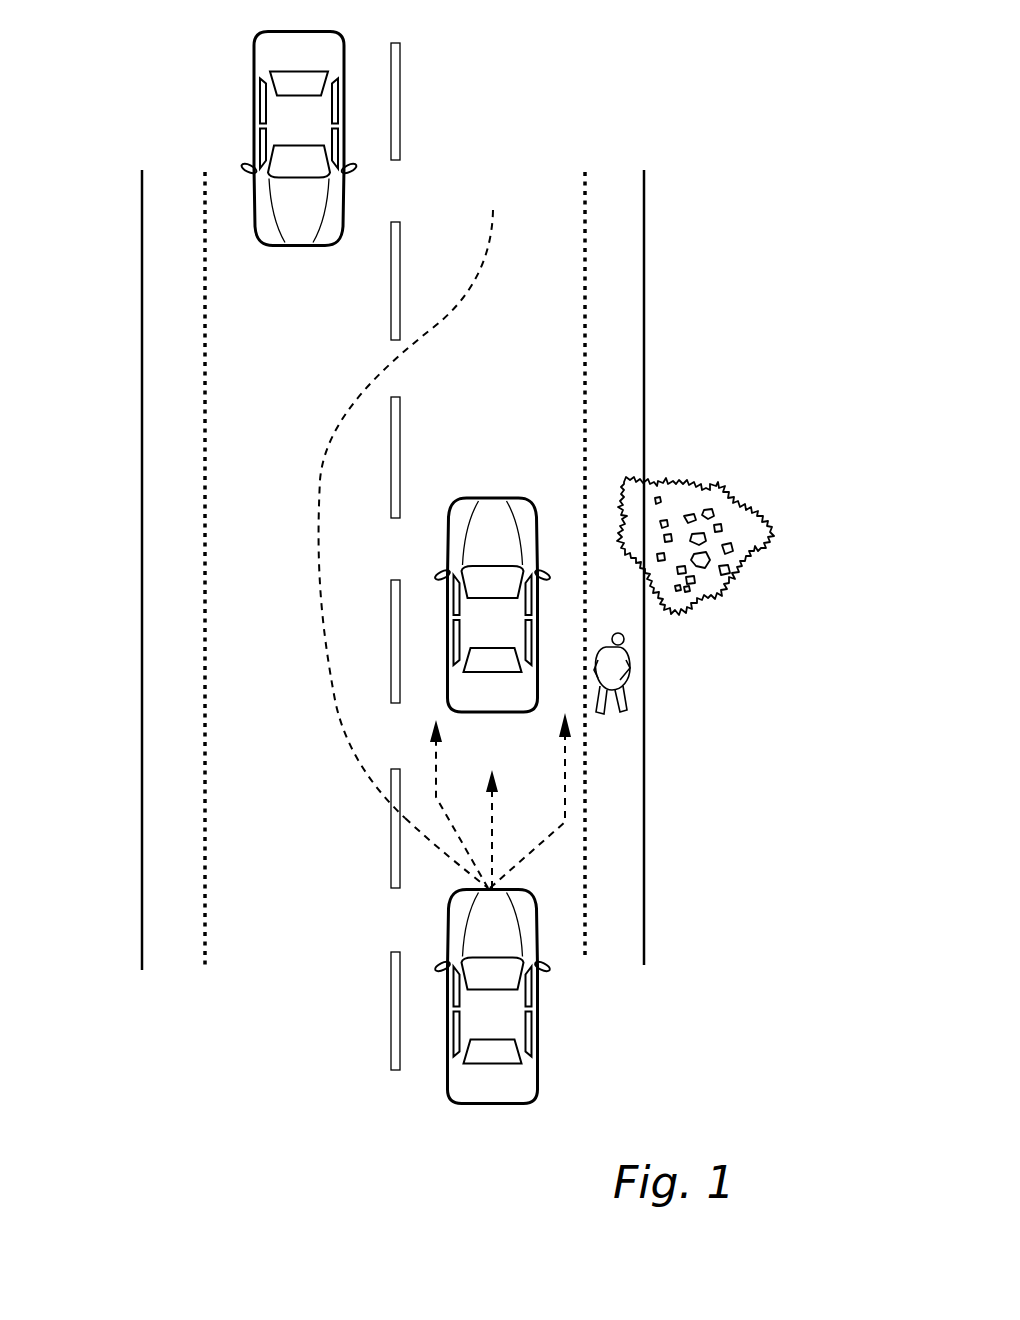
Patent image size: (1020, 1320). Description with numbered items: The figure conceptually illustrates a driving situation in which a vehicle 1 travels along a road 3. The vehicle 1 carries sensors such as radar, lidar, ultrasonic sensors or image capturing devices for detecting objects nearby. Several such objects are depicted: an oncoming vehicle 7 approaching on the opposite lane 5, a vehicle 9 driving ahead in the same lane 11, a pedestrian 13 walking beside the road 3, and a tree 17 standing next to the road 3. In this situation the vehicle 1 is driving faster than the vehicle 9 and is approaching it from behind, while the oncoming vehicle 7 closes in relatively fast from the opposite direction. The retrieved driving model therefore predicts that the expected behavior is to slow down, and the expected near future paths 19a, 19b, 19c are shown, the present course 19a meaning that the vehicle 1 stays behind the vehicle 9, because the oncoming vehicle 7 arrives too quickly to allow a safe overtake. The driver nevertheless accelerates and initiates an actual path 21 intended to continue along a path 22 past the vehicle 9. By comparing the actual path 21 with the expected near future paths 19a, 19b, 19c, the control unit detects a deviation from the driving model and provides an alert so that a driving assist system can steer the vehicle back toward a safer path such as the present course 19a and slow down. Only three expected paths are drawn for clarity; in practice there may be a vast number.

The vehicle 1 is at (488, 1105).
The road 3 is at (250, 815).
The opposite lane 5 is at (229, 199).
The oncoming vehicle 7 is at (300, 246).
The vehicle 9 is at (500, 498).
The same lane 11 is at (543, 243).
The pedestrian 13 is at (628, 655).
The tree 17 is at (725, 492).
The present course 19a is at (530, 857).
The expected near future path 19b is at (436, 773).
The expected near future path 19c is at (565, 797).
The actual path 21 is at (442, 855).
The path 22 is at (480, 270).